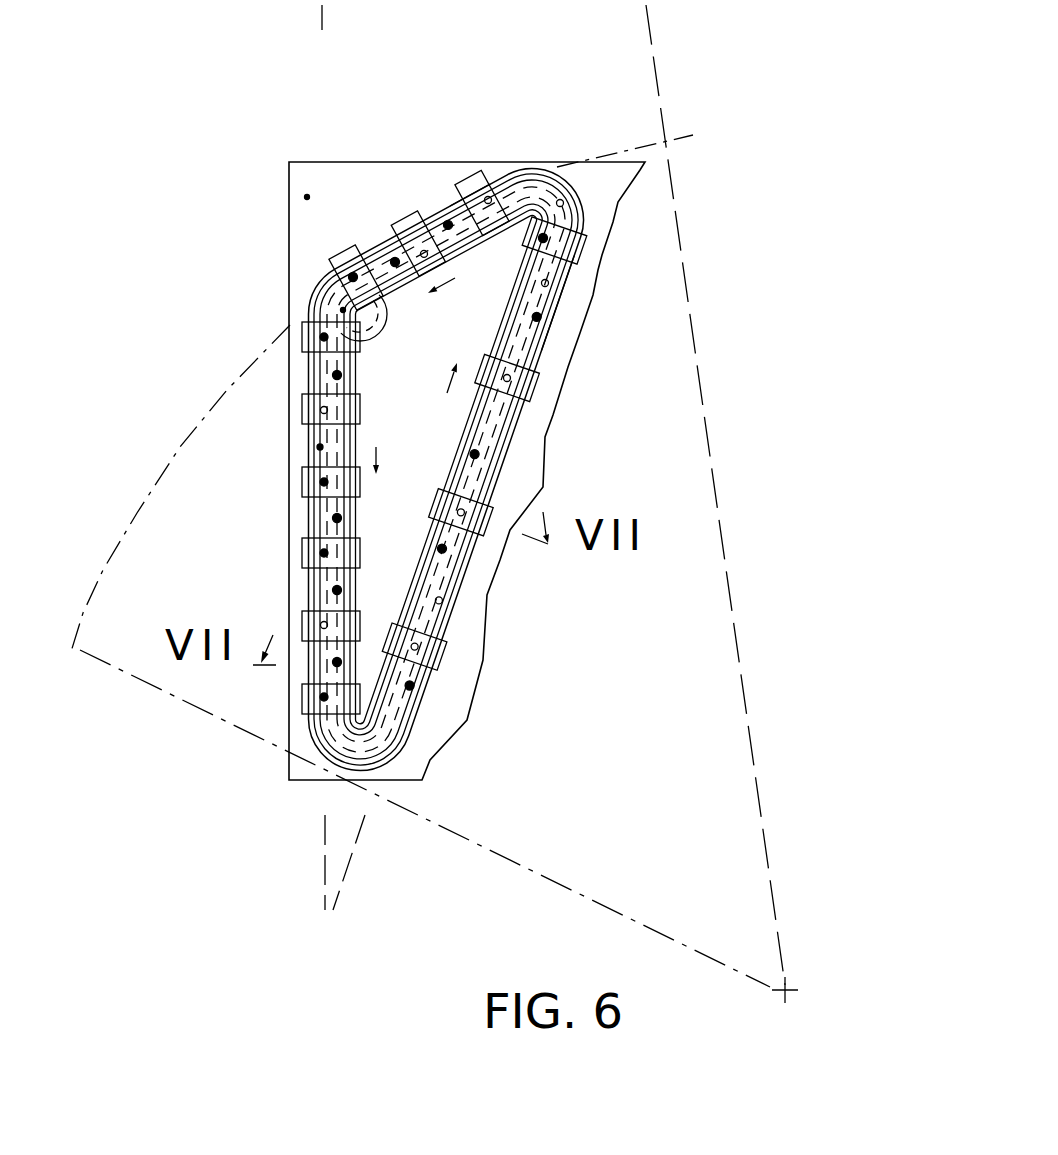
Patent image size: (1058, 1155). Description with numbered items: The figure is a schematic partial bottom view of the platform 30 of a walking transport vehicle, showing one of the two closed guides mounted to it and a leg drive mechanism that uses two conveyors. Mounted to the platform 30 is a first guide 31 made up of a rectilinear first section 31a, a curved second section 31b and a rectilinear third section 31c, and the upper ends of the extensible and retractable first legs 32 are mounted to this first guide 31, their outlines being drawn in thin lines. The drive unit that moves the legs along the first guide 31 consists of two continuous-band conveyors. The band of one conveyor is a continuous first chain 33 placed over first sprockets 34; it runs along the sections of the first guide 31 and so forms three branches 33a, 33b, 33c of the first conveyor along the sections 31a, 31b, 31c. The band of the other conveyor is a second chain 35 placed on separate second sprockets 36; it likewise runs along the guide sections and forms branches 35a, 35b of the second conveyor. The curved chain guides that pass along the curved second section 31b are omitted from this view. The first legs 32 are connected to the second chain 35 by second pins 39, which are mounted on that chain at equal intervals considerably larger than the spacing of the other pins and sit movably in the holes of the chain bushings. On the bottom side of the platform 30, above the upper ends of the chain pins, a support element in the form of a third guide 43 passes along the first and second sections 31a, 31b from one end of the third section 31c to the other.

The platform 30 is at (352, 260).
The first guide 31 is at (545, 170).
The rectilinear first section 31a is at (318, 447).
The curved second section 31b is at (395, 262).
The rectilinear third section 31c is at (562, 282).
The first legs 32 is at (313, 438).
The first chain 33 is at (555, 187).
The first branch of first chain 33a is at (330, 515).
The second branch of first chain 33b is at (468, 215).
The third branch of first chain 33c is at (541, 307).
The first sprockets 34 is at (307, 197).
The second chain 35 is at (542, 215).
The first branch of second chain 35a is at (337, 597).
The second branch of second chain 35b is at (449, 213).
The second sprockets 36 is at (343, 308).
The second pins 39 is at (337, 375).
The third guide 43 is at (330, 480).